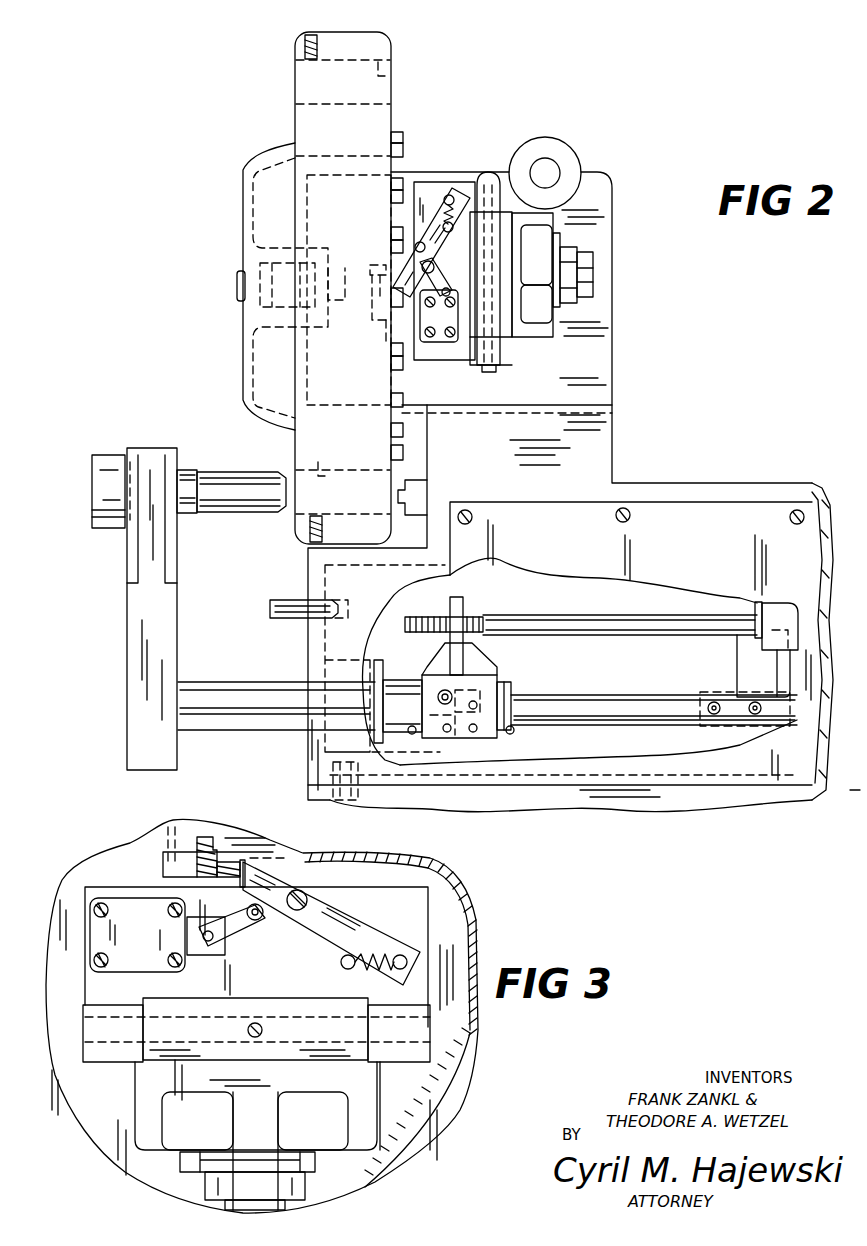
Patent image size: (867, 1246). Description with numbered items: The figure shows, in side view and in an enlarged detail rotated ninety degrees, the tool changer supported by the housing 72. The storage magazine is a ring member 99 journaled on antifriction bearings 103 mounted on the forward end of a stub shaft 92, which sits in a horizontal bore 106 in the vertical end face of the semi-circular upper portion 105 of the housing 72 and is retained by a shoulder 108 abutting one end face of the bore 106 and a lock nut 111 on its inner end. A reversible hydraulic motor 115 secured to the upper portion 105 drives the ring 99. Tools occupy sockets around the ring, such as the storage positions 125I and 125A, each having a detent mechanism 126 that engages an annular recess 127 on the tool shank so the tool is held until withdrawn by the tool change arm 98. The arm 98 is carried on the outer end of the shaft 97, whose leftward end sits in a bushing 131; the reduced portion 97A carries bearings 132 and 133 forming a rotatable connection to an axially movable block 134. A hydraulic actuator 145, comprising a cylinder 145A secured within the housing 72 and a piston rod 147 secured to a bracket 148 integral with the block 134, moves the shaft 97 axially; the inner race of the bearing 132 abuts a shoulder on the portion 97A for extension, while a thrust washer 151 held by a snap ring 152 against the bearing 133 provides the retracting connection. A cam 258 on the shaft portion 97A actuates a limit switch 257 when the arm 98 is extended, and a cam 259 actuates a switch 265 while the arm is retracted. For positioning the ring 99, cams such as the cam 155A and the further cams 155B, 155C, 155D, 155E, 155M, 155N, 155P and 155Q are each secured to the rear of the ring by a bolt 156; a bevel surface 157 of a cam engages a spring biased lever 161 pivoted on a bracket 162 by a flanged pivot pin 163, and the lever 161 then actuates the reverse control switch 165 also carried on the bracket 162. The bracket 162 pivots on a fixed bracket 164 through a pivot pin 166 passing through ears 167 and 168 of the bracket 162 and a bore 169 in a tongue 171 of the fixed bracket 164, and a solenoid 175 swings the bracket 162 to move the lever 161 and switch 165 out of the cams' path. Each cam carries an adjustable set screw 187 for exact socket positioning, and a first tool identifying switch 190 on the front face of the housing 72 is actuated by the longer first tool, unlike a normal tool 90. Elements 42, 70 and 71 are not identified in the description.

In FIG. 2, the shaft 42 is at (360, 263).
In FIG. 2, the base plate 70 is at (695, 810).
In FIG. 2, the frame member 71 is at (450, 786).
In FIG. 2, the housing 72 is at (745, 493).
In FIG. 2, the tool 90 is at (96, 478).
In FIG. 2, the stub shaft 92 is at (240, 287).
In FIG. 2, the shaft 97 is at (215, 689).
In FIG. 2, the reduced portion of shaft 97A is at (700, 723).
In FIG. 2, the tool change arm 98 is at (140, 668).
In FIG. 2, the ring member 99 is at (355, 38).
In FIG. 3, the ring member 99 is at (446, 940).
In FIG. 2, the antifriction bearings 103 is at (262, 315).
In FIG. 2, the semi-circular upper portion 105 is at (424, 182).
In FIG. 3, the semi-circular upper portion 105 is at (262, 843).
In FIG. 2, the bore 106 is at (380, 313).
In FIG. 2, the shoulder 108 is at (344, 258).
In FIG. 2, the lock nut 111 is at (390, 342).
In FIG. 2, the reversible hydraulic motor 115 is at (548, 175).
In FIG. 2, the mounting position 125I is at (395, 66).
In FIG. 2, the mounting position 125A is at (323, 466).
In FIG. 2, the detent mechanism 126 is at (305, 58).
In FIG. 2, the annular recess 127 is at (198, 473).
In FIG. 2, the bushing 131 is at (385, 683).
In FIG. 2, the bearing 132 is at (388, 695).
In FIG. 2, the bearing 133 is at (500, 686).
In FIG. 2, the axially movable block 134 is at (490, 665).
In FIG. 2, the hydraulic actuator 145 is at (780, 608).
In FIG. 2, the cylinder 145A is at (758, 604).
In FIG. 2, the piston rod 147 is at (553, 625).
In FIG. 2, the bracket 148 is at (464, 606).
In FIG. 2, the thrust washer 151 is at (510, 696).
In FIG. 2, the snap ring 152 is at (510, 713).
In FIG. 2, the cam 155A is at (403, 300).
In FIG. 2, the limit switch 155B is at (392, 200).
In FIG. 2, the limit switch 155C is at (392, 185).
In FIG. 3, the limit switch 155C is at (160, 858).
In FIG. 2, the limit switch 155D is at (401, 150).
In FIG. 2, the limit switch 155E is at (398, 132).
In FIG. 2, the limit switch 155M is at (403, 452).
In FIG. 2, the limit switch 155N is at (403, 426).
In FIG. 2, the limit switch 155P is at (403, 365).
In FIG. 2, the limit switch 155Q is at (403, 404).
In FIG. 3, the bolt 156 is at (226, 828).
In FIG. 3, the bevel surface 157 is at (187, 872).
In FIG. 2, the spring biased lever 161 is at (462, 186).
In FIG. 3, the spring biased lever 161 is at (340, 936).
In FIG. 2, the bracket 162 is at (476, 362).
In FIG. 3, the bracket 162 is at (440, 880).
In FIG. 2, the flanged pivot pin 163 is at (452, 234).
In FIG. 3, the flanged pivot pin 163 is at (310, 900).
In FIG. 3, the fixed bracket 164 is at (360, 1146).
In FIG. 2, the reverse control switch 165 is at (434, 270).
In FIG. 3, the reverse control switch 165 is at (92, 940).
In FIG. 2, the pivot pin 166 is at (490, 172).
In FIG. 3, the pivot pin 166 is at (400, 1060).
In FIG. 2, the ear 167 is at (508, 352).
In FIG. 3, the ear 167 is at (115, 1056).
In FIG. 2, the ear 168 is at (515, 172).
In FIG. 3, the ear 168 is at (390, 1062).
In FIG. 3, the bore 169 is at (218, 1045).
In FIG. 3, the tongue 171 is at (256, 1004).
In FIG. 2, the solenoid 175 is at (587, 262).
In FIG. 3, the solenoid 175 is at (215, 1166).
In FIG. 3, the adjustable set screw 187 is at (262, 868).
In FIG. 2, the first tool identifying switch 190 is at (422, 491).
In FIG. 2, the limit switch 257 is at (443, 704).
In FIG. 2, the cam 258 is at (406, 734).
In FIG. 2, the cam 259 is at (506, 735).
In FIG. 2, the switch 265 is at (740, 672).